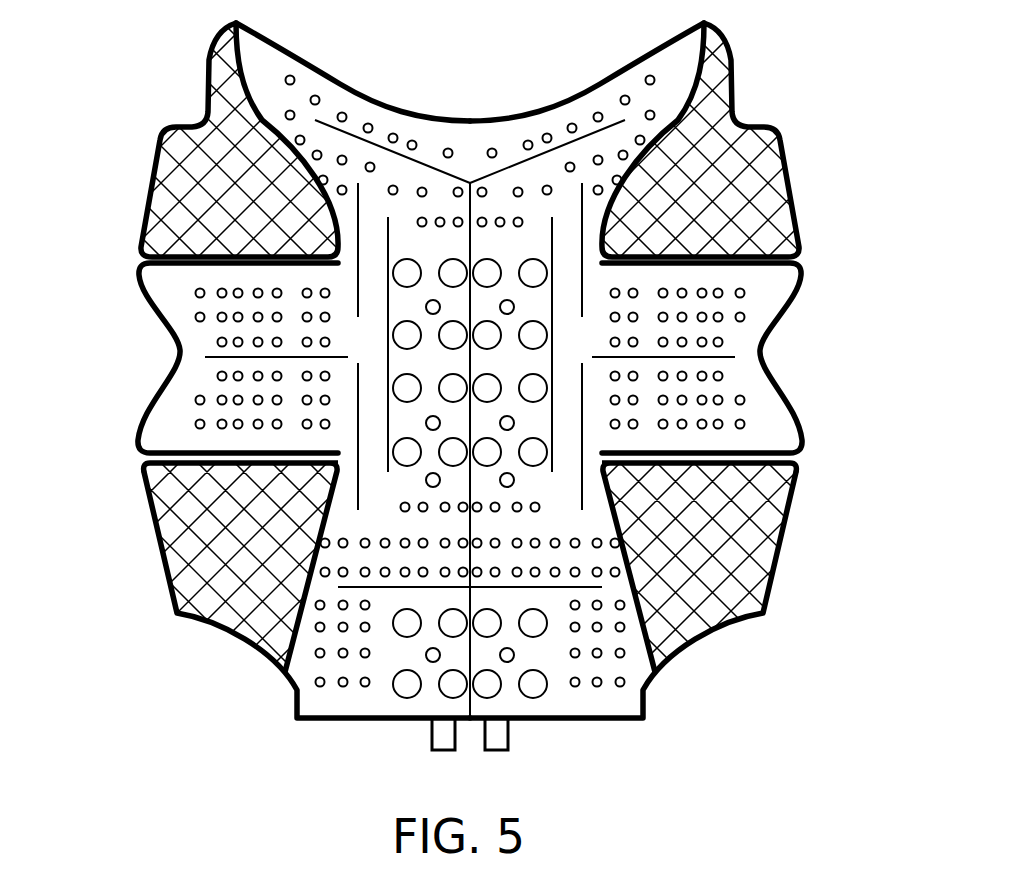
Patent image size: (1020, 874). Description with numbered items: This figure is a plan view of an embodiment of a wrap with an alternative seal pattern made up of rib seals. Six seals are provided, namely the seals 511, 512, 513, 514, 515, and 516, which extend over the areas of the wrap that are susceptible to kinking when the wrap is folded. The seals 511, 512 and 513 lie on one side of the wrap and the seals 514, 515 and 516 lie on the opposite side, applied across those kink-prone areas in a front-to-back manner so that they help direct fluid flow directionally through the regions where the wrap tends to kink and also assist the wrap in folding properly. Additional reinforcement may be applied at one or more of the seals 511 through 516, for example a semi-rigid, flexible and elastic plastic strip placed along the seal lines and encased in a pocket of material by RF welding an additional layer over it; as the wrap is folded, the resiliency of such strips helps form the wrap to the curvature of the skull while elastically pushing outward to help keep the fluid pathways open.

The seal 511 is at (357, 225).
The seal 512 is at (357, 443).
The seal 513 is at (387, 403).
The seal 514 is at (582, 227).
The seal 515 is at (582, 450).
The seal 516 is at (553, 410).